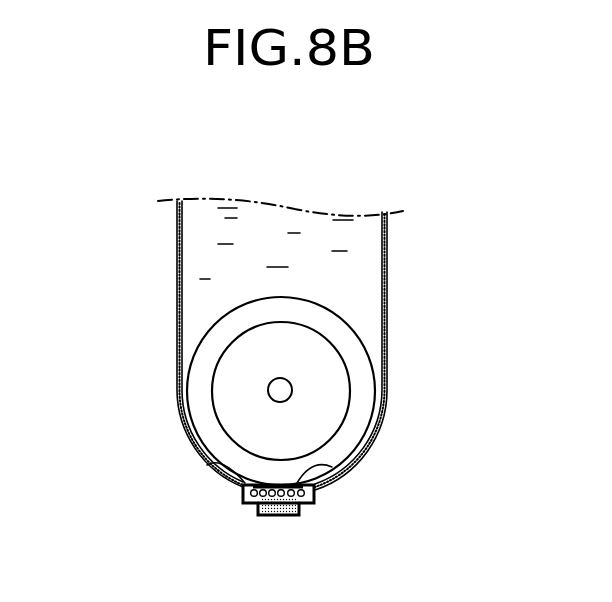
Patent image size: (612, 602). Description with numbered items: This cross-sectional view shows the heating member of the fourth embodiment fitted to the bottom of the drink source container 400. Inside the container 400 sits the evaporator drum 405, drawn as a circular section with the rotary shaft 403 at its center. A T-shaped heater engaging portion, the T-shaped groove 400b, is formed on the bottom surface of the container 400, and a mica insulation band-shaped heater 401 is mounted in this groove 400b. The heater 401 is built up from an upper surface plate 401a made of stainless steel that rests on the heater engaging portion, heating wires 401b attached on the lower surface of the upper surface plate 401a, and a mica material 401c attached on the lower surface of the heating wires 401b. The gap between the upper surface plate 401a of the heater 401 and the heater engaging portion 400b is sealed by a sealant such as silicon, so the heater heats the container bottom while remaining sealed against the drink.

The drink source container 400 is at (158, 287).
The T-shaped groove 400b is at (345, 465).
The mica insulation band-shaped heater 401 is at (268, 530).
The upper surface plate 401a is at (207, 465).
The heating wires 401b is at (310, 503).
The mica material 401c is at (275, 516).
The rotary shaft 403 is at (292, 391).
The evaporator drum 405 is at (342, 332).